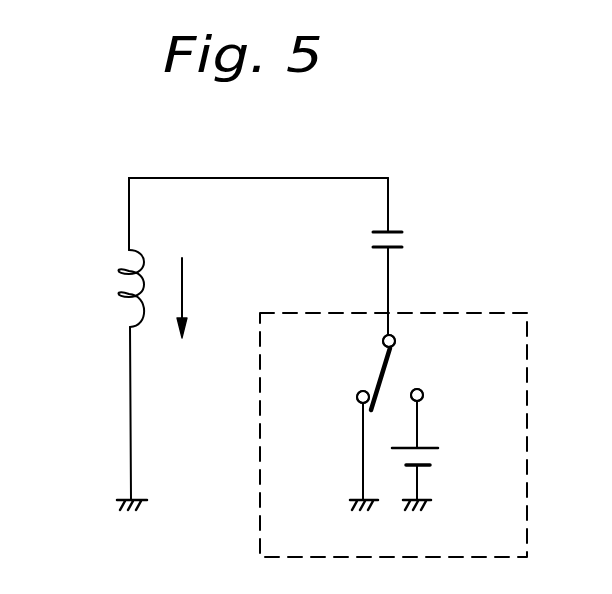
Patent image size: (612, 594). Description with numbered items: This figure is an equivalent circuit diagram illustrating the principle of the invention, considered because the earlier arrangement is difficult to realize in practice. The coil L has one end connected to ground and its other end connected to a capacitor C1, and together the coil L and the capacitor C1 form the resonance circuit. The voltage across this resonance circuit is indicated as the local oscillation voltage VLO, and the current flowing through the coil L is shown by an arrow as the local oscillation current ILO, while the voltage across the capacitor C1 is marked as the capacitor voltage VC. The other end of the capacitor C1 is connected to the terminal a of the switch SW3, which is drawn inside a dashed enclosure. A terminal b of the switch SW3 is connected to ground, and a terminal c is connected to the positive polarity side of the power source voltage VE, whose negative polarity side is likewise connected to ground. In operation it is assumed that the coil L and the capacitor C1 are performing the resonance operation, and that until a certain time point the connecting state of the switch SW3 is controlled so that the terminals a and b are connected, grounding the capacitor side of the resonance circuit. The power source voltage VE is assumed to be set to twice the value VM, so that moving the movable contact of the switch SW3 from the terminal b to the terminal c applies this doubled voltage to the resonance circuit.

The local oscillation voltage VLO is at (93, 196).
The local oscillation current ILO is at (189, 283).
The coil L is at (115, 288).
The capacitor C1 is at (404, 235).
The capacitor voltage VC is at (445, 260).
The switch SW3 is at (392, 380).
The terminal a of switch SW3 a is at (382, 341).
The terminal b of switch SW3 b is at (357, 396).
The terminal c of switch SW3 c is at (424, 393).
The power source voltage VE is at (457, 455).